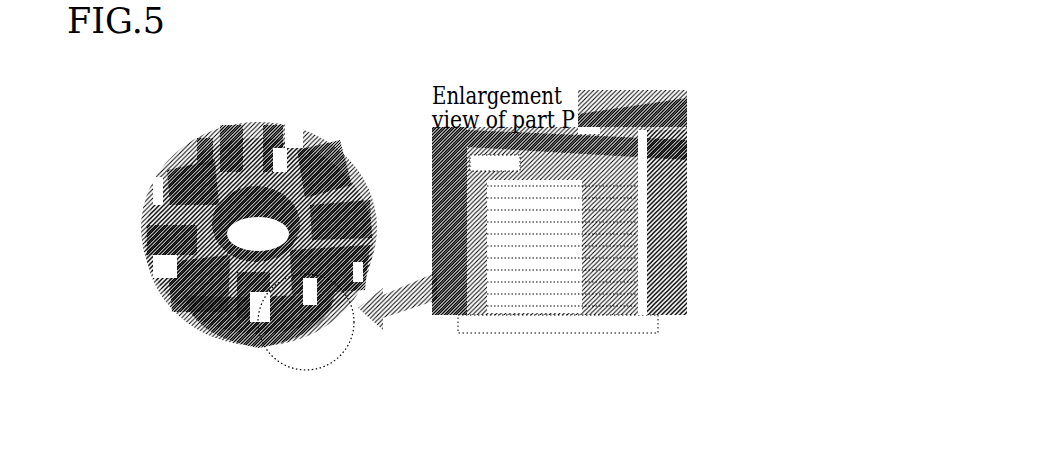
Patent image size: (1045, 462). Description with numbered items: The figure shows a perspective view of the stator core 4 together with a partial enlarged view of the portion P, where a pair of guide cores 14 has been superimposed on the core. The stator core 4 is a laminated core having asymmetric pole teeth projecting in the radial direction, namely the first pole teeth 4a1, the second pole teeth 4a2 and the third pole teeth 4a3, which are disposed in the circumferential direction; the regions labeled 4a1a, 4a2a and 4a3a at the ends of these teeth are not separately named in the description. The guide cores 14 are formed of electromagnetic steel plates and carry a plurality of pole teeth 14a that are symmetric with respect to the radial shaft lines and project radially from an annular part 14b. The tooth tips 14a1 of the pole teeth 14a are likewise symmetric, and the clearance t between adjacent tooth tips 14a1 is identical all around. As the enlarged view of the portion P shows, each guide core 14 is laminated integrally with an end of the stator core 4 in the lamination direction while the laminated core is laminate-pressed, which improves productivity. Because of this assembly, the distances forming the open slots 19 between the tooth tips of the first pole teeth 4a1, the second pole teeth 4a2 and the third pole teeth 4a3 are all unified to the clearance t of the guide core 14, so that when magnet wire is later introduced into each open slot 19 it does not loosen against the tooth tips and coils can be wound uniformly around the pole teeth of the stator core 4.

The stator core 4 is at (162, 155).
The first pole teeth 4a1 is at (333, 154).
The tooth end face 4a1a is at (350, 163).
The second pole teeth 4a2 is at (362, 228).
The yoke end face 4a2a is at (367, 218).
The third pole teeth 4a3 is at (332, 282).
The core back end face 4a3a is at (364, 276).
The guide core 14 is at (232, 178).
The pole teeth 14a is at (252, 133).
The tooth tips 14a1 is at (327, 136).
The annular part 14b is at (226, 258).
The open slot 19 is at (212, 136).
The clearance t is at (158, 181).
The enlarged portion P is at (314, 368).